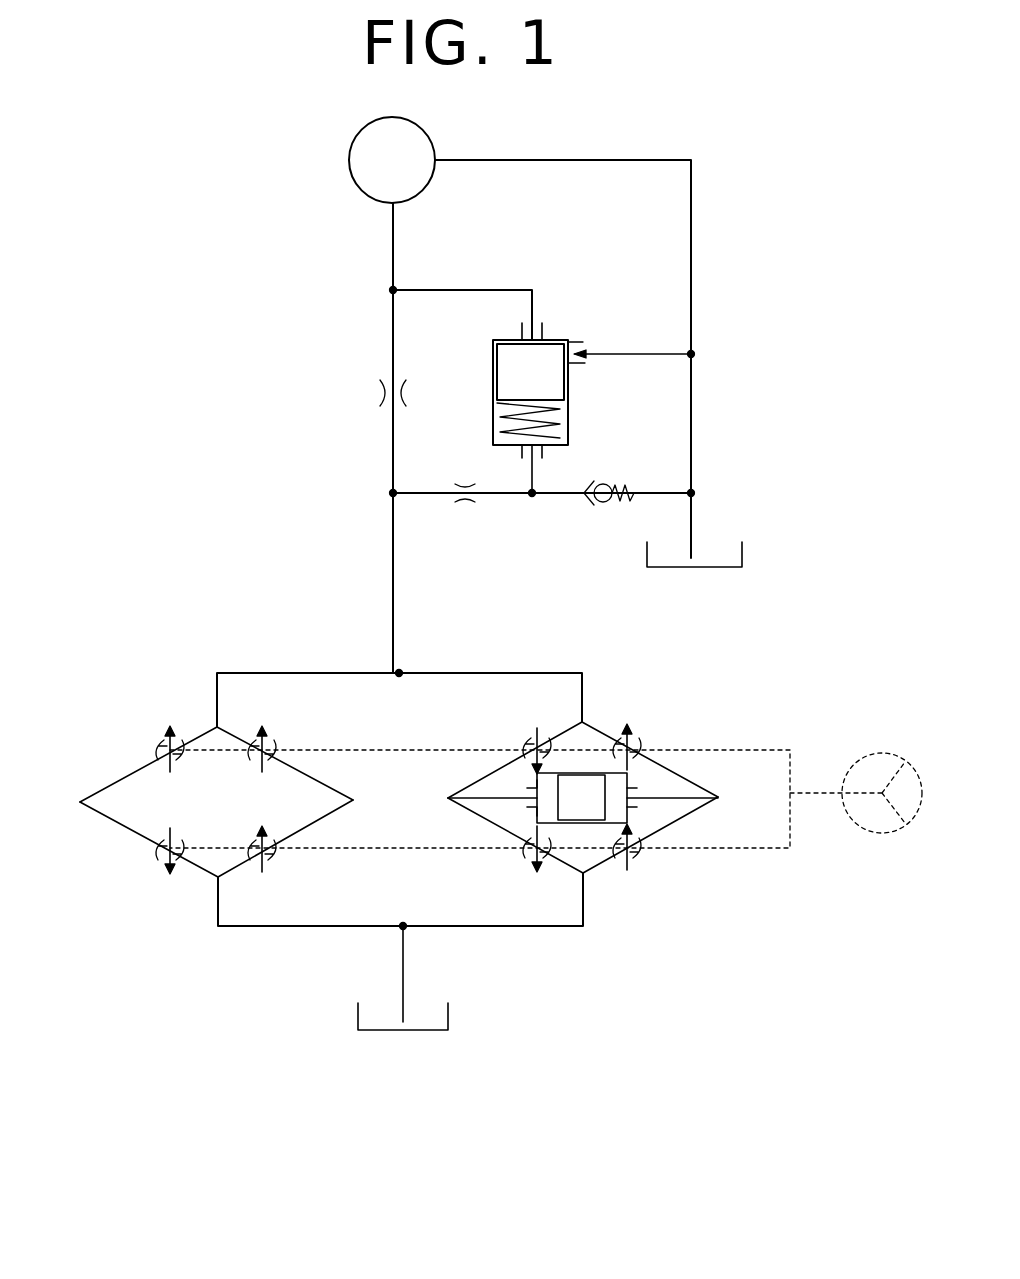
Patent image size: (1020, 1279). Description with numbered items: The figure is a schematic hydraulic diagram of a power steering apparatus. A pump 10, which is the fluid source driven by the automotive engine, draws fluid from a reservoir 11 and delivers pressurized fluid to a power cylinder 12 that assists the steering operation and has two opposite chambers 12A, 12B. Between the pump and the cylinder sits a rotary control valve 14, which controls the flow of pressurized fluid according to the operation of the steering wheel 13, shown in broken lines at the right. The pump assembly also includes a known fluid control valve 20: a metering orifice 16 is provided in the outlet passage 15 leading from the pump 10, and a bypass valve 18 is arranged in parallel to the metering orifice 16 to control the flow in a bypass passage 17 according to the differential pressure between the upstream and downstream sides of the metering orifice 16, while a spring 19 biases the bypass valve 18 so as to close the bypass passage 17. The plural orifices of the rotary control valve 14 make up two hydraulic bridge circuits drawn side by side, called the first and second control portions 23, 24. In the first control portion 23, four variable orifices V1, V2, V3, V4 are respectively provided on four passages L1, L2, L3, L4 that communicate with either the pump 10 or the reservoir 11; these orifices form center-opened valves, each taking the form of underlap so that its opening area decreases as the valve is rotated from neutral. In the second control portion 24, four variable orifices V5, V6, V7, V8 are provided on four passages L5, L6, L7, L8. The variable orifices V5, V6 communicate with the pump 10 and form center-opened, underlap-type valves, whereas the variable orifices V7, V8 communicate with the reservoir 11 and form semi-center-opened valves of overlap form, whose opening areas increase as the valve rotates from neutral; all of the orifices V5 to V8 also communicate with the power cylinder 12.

The pump 10 is at (418, 140).
The reservoir 11 is at (713, 568).
The power cylinder 12 is at (583, 800).
The chamber 12A is at (552, 816).
The chamber 12B is at (614, 812).
The steering wheel 13 is at (893, 830).
The rotary control valve 14 is at (462, 697).
The outlet passage 15 is at (393, 254).
The metering orifice 16 is at (378, 393).
The bypass passage 17 is at (549, 336).
The bypass valve 18 is at (497, 366).
The spring 19 is at (558, 416).
The fluid control valve 20 is at (562, 372).
The first control portion 23 is at (219, 766).
The second control portion 24 is at (585, 800).
The variable orifice V1 is at (152, 742).
The variable orifice V2 is at (285, 742).
The variable orifice V3 is at (152, 860).
The variable orifice V4 is at (285, 859).
The variable orifice V5 is at (518, 743).
The variable orifice V6 is at (649, 741).
The variable orifice V7 is at (518, 859).
The variable orifice V8 is at (649, 858).
The passage L1 is at (122, 776).
The passage L2 is at (320, 780).
The passage L3 is at (112, 820).
The passage L4 is at (320, 822).
The passage L5 is at (466, 778).
The passage L6 is at (698, 780).
The passage L7 is at (472, 820).
The passage L8 is at (690, 818).